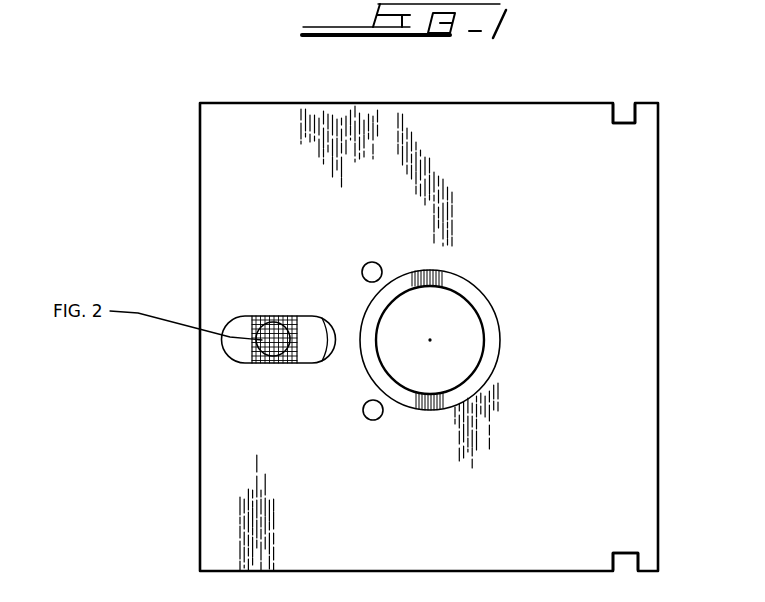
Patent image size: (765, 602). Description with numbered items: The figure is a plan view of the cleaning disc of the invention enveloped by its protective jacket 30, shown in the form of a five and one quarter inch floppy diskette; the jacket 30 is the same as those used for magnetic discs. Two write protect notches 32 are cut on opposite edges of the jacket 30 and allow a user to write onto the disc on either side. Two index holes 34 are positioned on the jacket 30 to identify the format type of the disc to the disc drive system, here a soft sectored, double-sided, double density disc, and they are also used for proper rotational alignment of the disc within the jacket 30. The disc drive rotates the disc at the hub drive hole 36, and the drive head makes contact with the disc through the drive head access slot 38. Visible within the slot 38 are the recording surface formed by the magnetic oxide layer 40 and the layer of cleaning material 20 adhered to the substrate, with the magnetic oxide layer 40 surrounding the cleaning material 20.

The cleaning material 20 is at (272, 360).
The protective jacket 30 is at (212, 542).
The write protect notches 32 is at (625, 113).
The index holes 34 is at (372, 263).
The hub drive hole 36 is at (463, 335).
The drive head access slot 38 is at (297, 318).
The magnetic oxide layer 40 is at (243, 330).